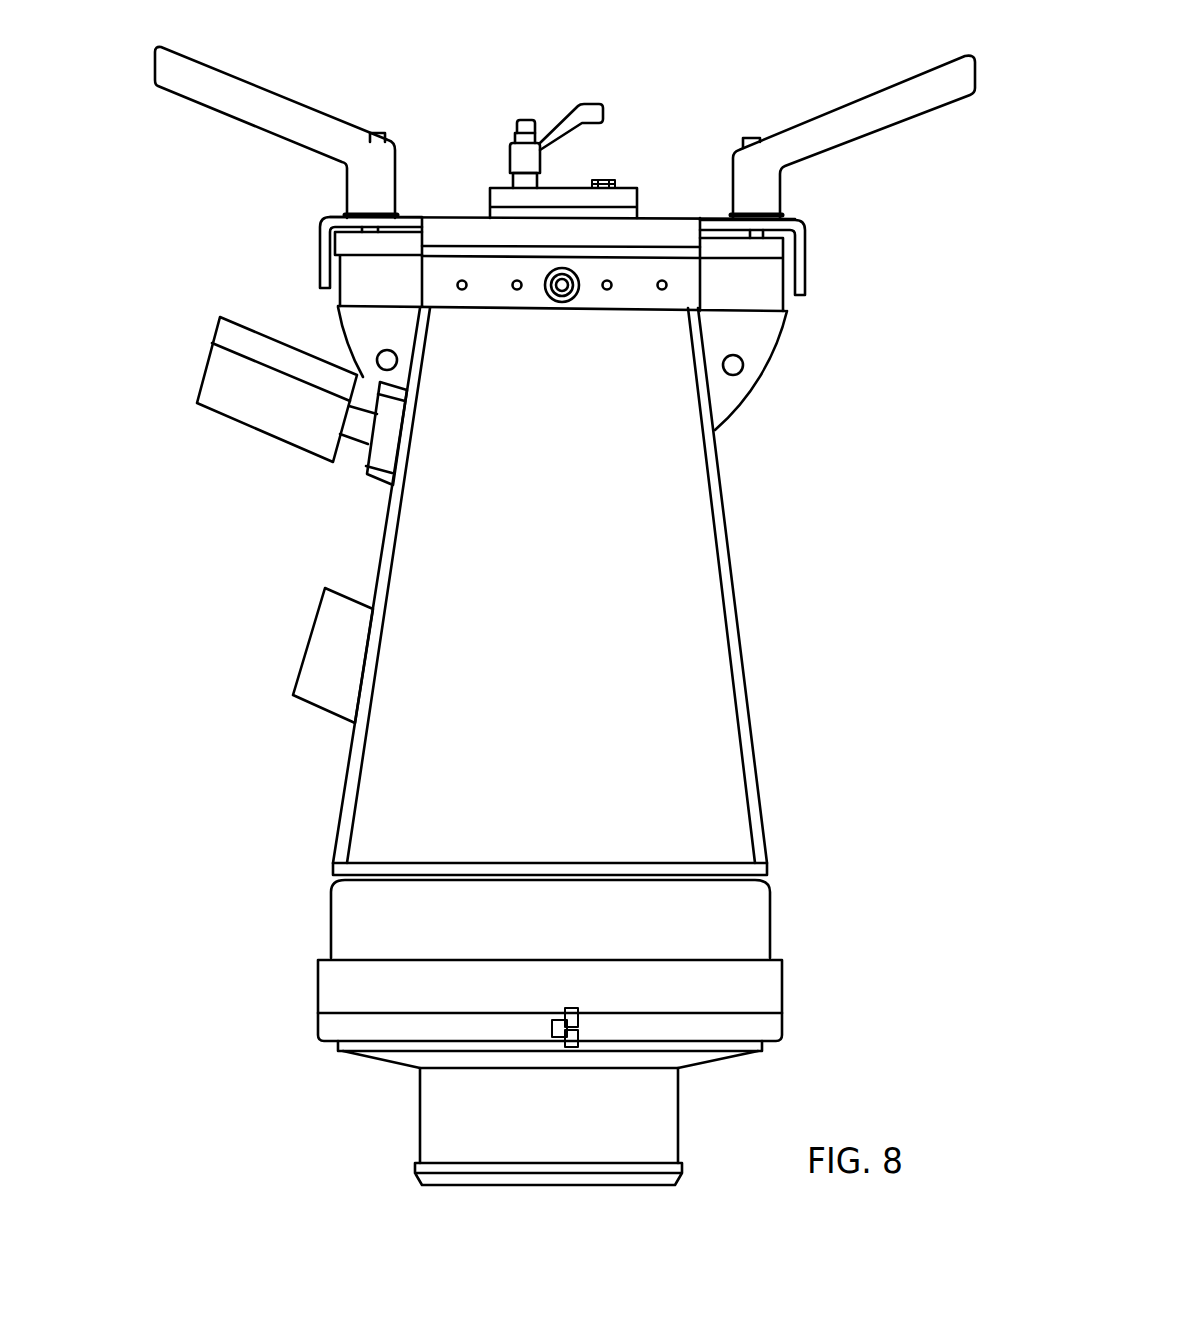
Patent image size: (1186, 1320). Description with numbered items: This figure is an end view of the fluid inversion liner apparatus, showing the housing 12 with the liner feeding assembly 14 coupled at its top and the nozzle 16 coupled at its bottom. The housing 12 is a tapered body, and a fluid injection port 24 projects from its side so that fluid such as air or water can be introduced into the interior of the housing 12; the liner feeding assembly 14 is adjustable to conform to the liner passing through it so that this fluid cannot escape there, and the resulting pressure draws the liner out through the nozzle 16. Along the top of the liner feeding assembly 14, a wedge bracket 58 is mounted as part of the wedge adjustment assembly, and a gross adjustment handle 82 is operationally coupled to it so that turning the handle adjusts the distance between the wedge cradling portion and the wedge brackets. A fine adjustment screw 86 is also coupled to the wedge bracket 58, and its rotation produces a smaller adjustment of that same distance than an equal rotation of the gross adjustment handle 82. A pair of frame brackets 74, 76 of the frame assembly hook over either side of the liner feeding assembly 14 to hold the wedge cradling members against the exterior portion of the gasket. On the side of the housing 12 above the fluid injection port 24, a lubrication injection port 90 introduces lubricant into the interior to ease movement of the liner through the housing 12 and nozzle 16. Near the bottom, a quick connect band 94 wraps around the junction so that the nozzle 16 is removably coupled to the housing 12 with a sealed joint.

The housing 12 is at (740, 620).
The liner feeding assembly 14 is at (812, 263).
The nozzle 16 is at (668, 1127).
The fluid injection port 24 is at (303, 660).
The wedge bracket 58 is at (637, 192).
The frame bracket 74 is at (320, 218).
The frame bracket 76 is at (807, 230).
The gross adjustment handle 82 is at (560, 124).
The fine adjustment screw 86 is at (603, 180).
The lubrication injection port 90 is at (363, 448).
The quick connect band 94 is at (773, 1028).